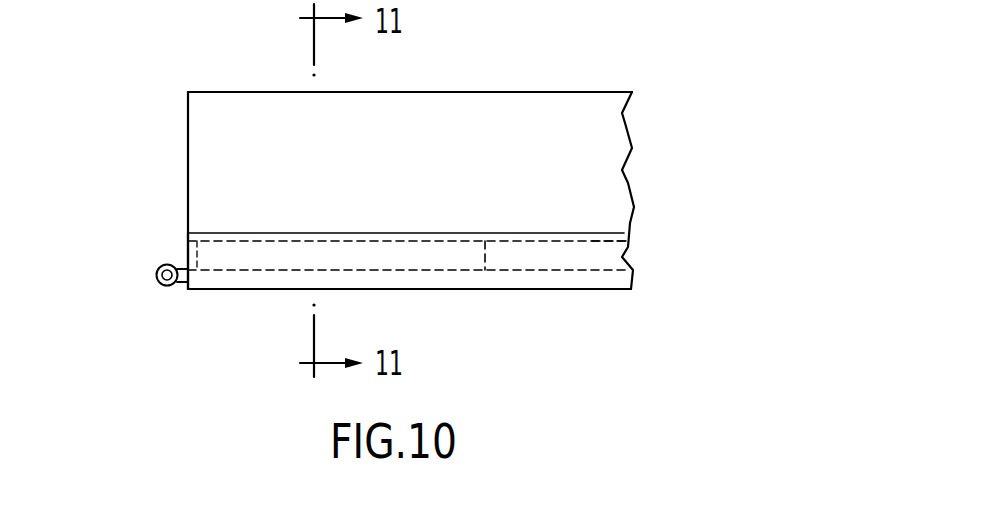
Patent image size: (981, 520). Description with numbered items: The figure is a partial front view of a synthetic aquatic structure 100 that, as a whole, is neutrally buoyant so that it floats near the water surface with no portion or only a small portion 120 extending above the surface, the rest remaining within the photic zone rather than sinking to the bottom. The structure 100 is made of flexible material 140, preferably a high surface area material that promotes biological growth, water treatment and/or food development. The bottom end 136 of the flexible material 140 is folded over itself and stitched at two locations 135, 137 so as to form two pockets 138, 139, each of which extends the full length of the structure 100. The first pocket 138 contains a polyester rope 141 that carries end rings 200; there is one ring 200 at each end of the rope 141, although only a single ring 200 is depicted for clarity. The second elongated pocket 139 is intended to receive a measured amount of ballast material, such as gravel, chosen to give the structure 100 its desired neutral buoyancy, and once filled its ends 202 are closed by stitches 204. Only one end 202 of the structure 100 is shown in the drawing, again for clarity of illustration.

The synthetic aquatic structure 100 is at (698, 138).
The small portion 120 is at (492, 92).
The stitching location 135 is at (523, 270).
The bottom end 136 is at (418, 233).
The stitching location 137 is at (485, 270).
The first pocket 138 is at (600, 282).
The second elongated pocket 139 is at (592, 253).
The flexible material 140 is at (258, 153).
The polyester rope 141 is at (178, 285).
The end ring 200 is at (158, 284).
The end of second pocket 202 is at (188, 250).
The stitches 204 is at (205, 252).